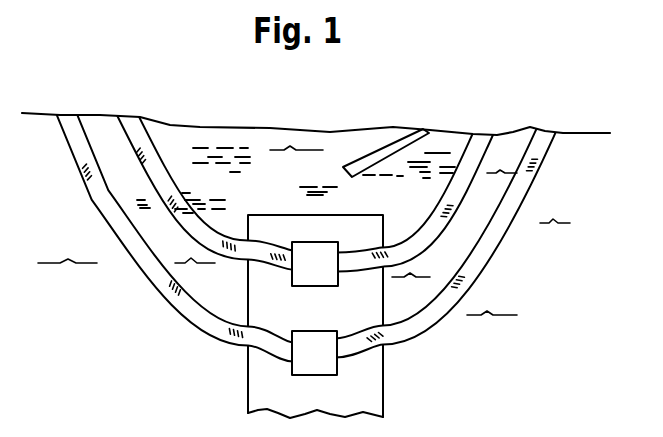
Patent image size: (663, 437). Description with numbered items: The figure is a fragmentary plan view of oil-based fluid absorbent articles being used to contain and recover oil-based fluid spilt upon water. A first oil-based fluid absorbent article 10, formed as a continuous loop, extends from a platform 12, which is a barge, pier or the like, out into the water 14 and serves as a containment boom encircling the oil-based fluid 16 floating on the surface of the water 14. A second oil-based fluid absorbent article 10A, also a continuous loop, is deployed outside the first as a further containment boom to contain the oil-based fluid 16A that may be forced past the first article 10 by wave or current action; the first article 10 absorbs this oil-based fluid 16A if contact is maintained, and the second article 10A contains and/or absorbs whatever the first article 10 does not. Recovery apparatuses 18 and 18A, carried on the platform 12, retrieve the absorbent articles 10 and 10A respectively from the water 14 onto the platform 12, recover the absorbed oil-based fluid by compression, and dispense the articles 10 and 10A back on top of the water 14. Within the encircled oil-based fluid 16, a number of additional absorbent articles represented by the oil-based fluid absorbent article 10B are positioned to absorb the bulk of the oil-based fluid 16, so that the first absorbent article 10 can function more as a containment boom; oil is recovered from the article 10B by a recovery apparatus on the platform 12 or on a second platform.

The oil-based fluid absorbent article 10 is at (153, 166).
The second oil-based fluid absorbent article 10A is at (75, 147).
The oil-based fluid absorbent article 10B is at (368, 155).
The platform 12 is at (383, 389).
The water 14 is at (541, 275).
The oil-based fluid 16 is at (204, 200).
The oil-based fluid 16A is at (140, 200).
The recovery apparatus 18 is at (322, 272).
The recovery apparatus 18A is at (328, 366).